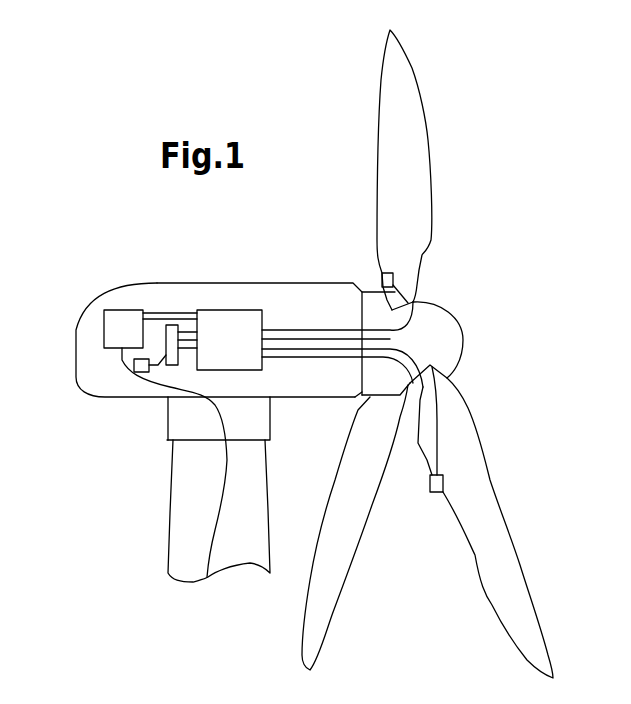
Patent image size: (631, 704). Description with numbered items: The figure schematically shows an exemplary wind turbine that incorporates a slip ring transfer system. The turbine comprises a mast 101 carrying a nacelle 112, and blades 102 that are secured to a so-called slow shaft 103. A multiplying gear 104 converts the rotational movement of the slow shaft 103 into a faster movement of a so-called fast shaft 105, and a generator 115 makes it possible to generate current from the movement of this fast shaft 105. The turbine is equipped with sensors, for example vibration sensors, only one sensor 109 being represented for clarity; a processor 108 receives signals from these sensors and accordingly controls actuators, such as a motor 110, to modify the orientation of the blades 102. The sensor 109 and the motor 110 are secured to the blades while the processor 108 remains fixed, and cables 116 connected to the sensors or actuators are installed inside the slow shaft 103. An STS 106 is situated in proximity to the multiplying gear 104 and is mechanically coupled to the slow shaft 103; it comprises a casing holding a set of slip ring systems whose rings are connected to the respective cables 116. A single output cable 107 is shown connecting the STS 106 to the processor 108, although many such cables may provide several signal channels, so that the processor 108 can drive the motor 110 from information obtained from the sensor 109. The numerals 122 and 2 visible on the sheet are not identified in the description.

The mast 101 is at (168, 518).
The blades 102 is at (488, 578).
The slow shaft 103 is at (327, 330).
The multiplying gear 104 is at (253, 353).
The fast shaft 105 is at (160, 313).
The STS 106 is at (173, 367).
The output cable 107 is at (160, 363).
The processor 108 is at (122, 362).
The sensor 109 is at (430, 484).
The motor 110 is at (380, 280).
The nacelle 112 is at (78, 365).
The generator 115 is at (82, 328).
The cables 116 is at (293, 357).
The rotor blade 122 is at (360, 544).
The wind turbine 2 is at (4, 585).